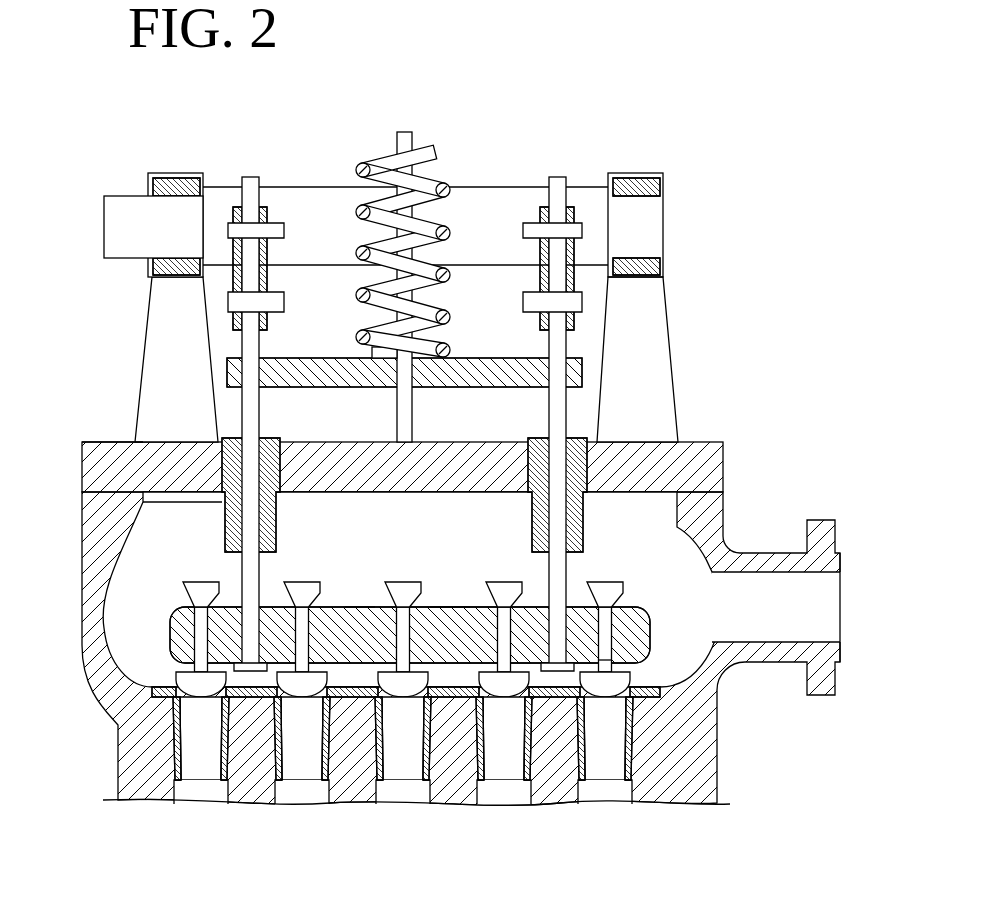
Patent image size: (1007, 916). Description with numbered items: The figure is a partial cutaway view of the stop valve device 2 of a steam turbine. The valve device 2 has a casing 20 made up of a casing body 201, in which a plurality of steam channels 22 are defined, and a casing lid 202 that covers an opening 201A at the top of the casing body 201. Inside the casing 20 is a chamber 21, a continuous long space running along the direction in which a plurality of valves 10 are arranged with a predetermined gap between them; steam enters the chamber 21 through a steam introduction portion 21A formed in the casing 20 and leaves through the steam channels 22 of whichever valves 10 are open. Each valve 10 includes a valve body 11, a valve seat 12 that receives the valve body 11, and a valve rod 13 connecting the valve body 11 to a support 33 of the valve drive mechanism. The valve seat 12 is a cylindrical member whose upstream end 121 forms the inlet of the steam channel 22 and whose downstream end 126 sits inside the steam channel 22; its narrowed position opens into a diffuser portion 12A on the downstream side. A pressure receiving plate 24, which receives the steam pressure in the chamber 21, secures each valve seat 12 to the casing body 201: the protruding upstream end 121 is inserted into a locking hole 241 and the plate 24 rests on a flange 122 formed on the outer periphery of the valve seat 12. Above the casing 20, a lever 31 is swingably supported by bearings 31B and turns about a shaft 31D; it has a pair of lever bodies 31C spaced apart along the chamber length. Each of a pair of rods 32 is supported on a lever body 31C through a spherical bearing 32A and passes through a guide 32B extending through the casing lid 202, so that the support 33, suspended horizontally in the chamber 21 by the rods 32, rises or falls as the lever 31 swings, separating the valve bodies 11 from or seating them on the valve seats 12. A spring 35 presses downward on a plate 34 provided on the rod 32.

The stop valve device 2 is at (774, 366).
The valve 10 is at (395, 609).
The valve body 11 is at (308, 640).
The valve seat 12 is at (278, 672).
The diffuser portion 12A is at (283, 768).
The valve rod 13 is at (219, 594).
The casing 20 is at (469, 622).
The chamber 21 is at (392, 530).
The steam introduction portion 21A is at (842, 613).
The steam channel 22 is at (200, 790).
The pressure receiving plate 24 is at (558, 665).
The support 33 is at (448, 605).
The plate 34 is at (510, 357).
The spring 35 is at (437, 175).
The lever 31 is at (303, 185).
The bearing 31B is at (185, 176).
The lever body 31C is at (241, 207).
The shaft 31D is at (496, 186).
The rod 32 is at (232, 398).
The spherical bearing 32A is at (247, 242).
The guide 32B is at (222, 510).
The upstream end 121 is at (575, 668).
The flange 122 is at (437, 703).
The downstream end 126 is at (614, 790).
The casing body 201 is at (730, 520).
The opening 201A is at (150, 470).
The casing lid 202 is at (738, 470).
The locking hole 241 is at (362, 605).